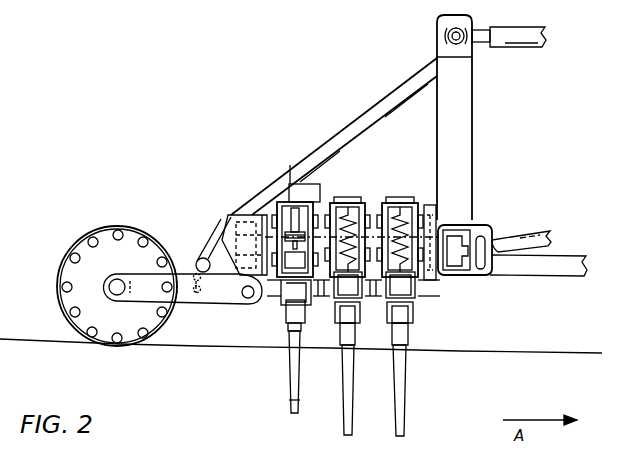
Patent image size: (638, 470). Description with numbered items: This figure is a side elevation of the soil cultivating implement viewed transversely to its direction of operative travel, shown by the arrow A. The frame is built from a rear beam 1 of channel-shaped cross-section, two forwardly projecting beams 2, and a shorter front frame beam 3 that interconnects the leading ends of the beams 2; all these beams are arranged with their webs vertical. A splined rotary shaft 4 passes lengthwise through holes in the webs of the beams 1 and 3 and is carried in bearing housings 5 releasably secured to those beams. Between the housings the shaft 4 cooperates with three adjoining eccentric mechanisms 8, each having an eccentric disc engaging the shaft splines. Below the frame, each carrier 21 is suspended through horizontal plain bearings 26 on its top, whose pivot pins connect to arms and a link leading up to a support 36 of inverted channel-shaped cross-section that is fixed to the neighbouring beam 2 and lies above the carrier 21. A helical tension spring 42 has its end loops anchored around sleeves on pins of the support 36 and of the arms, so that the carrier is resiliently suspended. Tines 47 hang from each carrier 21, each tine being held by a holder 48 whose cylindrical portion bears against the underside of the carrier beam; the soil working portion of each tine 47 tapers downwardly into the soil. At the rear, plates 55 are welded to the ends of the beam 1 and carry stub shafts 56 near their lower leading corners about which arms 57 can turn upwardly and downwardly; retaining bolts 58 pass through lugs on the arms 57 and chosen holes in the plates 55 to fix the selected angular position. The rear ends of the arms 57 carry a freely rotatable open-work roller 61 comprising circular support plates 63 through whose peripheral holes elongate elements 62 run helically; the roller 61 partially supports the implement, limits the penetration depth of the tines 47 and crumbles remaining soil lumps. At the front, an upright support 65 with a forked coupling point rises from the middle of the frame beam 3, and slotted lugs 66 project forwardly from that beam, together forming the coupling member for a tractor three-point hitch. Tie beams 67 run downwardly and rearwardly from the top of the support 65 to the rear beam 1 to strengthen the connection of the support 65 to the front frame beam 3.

The beam 1 is at (214, 214).
The beams 2 is at (442, 292).
The frame beam 3 is at (458, 220).
The rotary shaft 4 is at (215, 224).
The bearing housings 5 is at (290, 402).
The eccentric mechanisms 8 is at (320, 185).
The carrier 21 is at (310, 318).
The bearings 26 is at (278, 290).
The support 36 is at (290, 178).
The helical tension spring 42 is at (346, 205).
The tines 47 is at (342, 396).
The holder 48 is at (283, 336).
The plates 55 is at (210, 303).
The stub shafts 56 is at (249, 303).
The arms 57 is at (121, 300).
The retaining bolts 58 is at (200, 258).
The roller 61 is at (84, 232).
The elongate elements 62 is at (124, 238).
The support plates 63 is at (62, 305).
The upright support 65 is at (470, 142).
The lugs 66 is at (482, 226).
The tie beams 67 is at (350, 130).